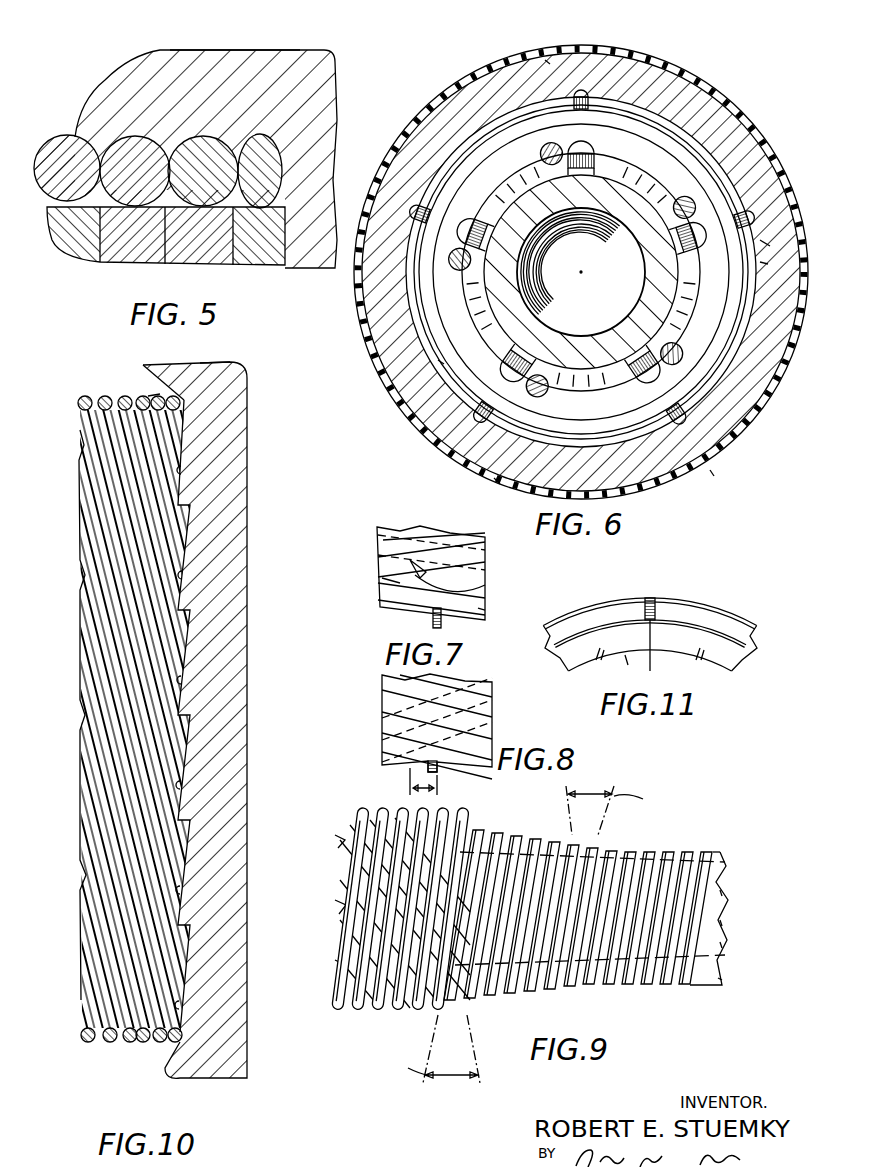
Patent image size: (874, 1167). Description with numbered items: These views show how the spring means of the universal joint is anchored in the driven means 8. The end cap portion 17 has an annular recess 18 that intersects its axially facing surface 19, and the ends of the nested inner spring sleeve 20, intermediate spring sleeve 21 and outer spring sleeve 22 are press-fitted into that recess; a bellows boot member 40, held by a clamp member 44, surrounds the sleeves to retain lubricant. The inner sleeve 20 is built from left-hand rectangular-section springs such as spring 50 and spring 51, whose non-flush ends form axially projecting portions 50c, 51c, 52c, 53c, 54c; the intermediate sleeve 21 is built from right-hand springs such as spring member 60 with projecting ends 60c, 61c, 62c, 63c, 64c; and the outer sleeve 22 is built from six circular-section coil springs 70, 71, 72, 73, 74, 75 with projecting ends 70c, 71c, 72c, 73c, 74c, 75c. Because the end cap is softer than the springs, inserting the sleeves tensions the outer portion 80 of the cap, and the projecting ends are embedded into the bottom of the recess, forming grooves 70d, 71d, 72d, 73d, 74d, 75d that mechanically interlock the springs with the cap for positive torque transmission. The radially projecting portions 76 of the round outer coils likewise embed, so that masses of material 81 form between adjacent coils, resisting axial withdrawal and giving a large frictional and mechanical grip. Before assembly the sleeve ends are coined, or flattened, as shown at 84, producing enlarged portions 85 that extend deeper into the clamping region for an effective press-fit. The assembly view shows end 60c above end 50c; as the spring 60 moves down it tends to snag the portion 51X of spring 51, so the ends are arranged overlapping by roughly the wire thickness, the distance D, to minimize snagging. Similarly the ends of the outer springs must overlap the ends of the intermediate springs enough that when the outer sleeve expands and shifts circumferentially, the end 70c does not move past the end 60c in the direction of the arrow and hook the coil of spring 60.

In FIG. 6, the driven means 8 is at (380, 320).
In FIG. 5, the end cap portion 17 is at (333, 54).
In FIG. 6, the end cap portion 17 is at (762, 142).
In FIG. 10, the end cap portion 17 is at (212, 1072).
In FIG. 10, the annular extending recess 18 is at (156, 396).
In FIG. 10, the surface 19 is at (142, 376).
In FIG. 6, the inner spring sleeve 20 is at (496, 480).
In FIG. 9, the inner spring sleeve 20 is at (683, 846).
In FIG. 6, the intermediate spring sleeve 21 is at (788, 340).
In FIG. 9, the intermediate spring sleeve 21 is at (509, 822).
In FIG. 6, the outer spring sleeve 22 is at (782, 182).
In FIG. 9, the outer spring sleeve 22 is at (378, 1028).
In FIG. 6, the boot member 40 is at (662, 64).
In FIG. 6, the clamp member 44 is at (724, 106).
In FIG. 7, the spring 50 is at (395, 612).
In FIG. 6, the axially projecting portion 50c is at (548, 62).
In FIG. 7, the axially projecting portion 50c is at (444, 626).
In FIG. 9, the axially projecting portion 50c is at (722, 860).
In FIG. 7, the spring 51 is at (490, 613).
In FIG. 7, the portion of the spring 51X is at (380, 593).
In FIG. 6, the axially projecting portion 51c is at (762, 264).
In FIG. 9, the axially projecting portion 51c is at (722, 896).
In FIG. 6, the axially projecting portion 52c is at (712, 473).
In FIG. 9, the axially projecting portion 52c is at (722, 946).
In FIG. 6, the axially projecting portion 53c is at (440, 362).
In FIG. 9, the axially projecting portion 53c is at (722, 980).
In FIG. 6, the axially projecting portion 54c is at (492, 200).
In FIG. 9, the axially projecting portion 54c is at (722, 926).
In FIG. 7, the spring member 60 is at (488, 592).
In FIG. 6, the axially projecting portion 60c is at (692, 83).
In FIG. 7, the axially projecting portion 60c is at (385, 579).
In FIG. 11, the axially projecting portion 60c is at (651, 652).
In FIG. 6, the axially projecting portion 61c is at (388, 286).
In FIG. 6, the axially projecting portion 62c is at (482, 432).
In FIG. 6, the axially projecting portion 63c is at (752, 418).
In FIG. 6, the axially projecting portion 64c is at (772, 246).
In FIG. 10, the coil spring 70 is at (78, 400).
In FIG. 10, the coil spring 71 is at (98, 408).
In FIG. 10, the coil spring 72 is at (118, 410).
In FIG. 10, the coil spring 73 is at (138, 412).
In FIG. 10, the coil spring 74 is at (150, 398).
In FIG. 10, the coil spring 75 is at (210, 364).
In FIG. 6, the axially projecting portion 70c is at (615, 62).
In FIG. 11, the axially projecting portion 70c is at (652, 598).
In FIG. 6, the axially projecting portion 71c is at (794, 223).
In FIG. 6, the axially projecting portion 72c is at (690, 318).
In FIG. 6, the axially projecting portion 73c is at (727, 455).
In FIG. 6, the axially projecting portion 74c is at (462, 416).
In FIG. 6, the axially projecting portion 75c is at (478, 210).
In FIG. 10, the groove 70d is at (183, 1005).
In FIG. 10, the groove 71d is at (184, 896).
In FIG. 10, the groove 72d is at (184, 790).
In FIG. 10, the groove 73d is at (185, 684).
In FIG. 10, the groove 74d is at (187, 578).
In FIG. 10, the groove 75d is at (185, 470).
In FIG. 5, the radially projecting portions 76 is at (112, 143).
In FIG. 5, the outer portion of the end cap 80 is at (185, 50).
In FIG. 5, the masses of material 81 is at (236, 92).
In FIG. 6, the coined portion 84 is at (573, 100).
In FIG. 10, the coined portion 84 is at (194, 506).
In FIG. 5, the enlarged portions 85 is at (337, 84).
In FIG. 6, the enlarged portions 85 is at (588, 70).
In FIG. 8, the distance D is at (411, 789).